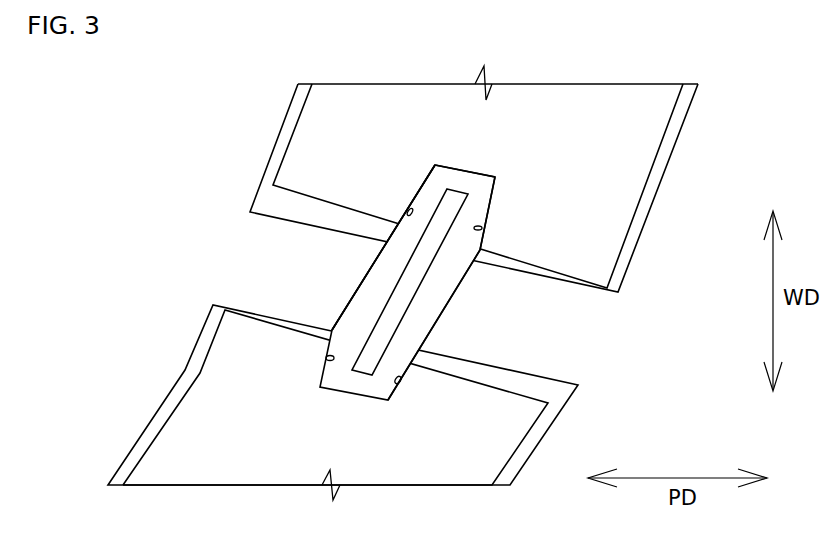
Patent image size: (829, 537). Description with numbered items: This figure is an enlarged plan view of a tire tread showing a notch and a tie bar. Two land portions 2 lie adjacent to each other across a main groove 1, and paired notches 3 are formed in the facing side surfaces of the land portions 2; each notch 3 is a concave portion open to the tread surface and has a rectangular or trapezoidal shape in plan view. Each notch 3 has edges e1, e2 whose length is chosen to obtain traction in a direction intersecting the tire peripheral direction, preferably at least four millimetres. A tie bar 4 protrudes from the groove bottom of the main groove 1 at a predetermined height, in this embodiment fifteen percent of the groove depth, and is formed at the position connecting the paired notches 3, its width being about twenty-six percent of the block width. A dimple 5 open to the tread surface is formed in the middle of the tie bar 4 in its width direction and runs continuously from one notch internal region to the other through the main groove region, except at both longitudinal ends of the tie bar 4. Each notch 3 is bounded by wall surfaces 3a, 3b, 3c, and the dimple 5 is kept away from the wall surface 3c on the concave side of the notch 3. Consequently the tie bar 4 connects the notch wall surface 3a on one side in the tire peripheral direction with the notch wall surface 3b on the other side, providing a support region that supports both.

The main groove 1 is at (590, 340).
The land portion 2 is at (590, 151).
The notch 3 is at (447, 162).
The notch wall surface 3a is at (428, 183).
The notch wall surface 3b is at (483, 204).
The notch wall surface 3c is at (473, 179).
The tie bar 4 is at (368, 294).
The dimple 5 is at (424, 265).
The edge e1 is at (410, 212).
The edge e2 is at (478, 228).